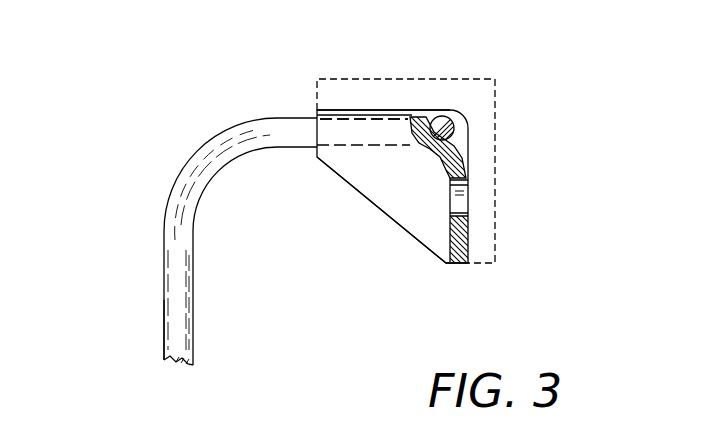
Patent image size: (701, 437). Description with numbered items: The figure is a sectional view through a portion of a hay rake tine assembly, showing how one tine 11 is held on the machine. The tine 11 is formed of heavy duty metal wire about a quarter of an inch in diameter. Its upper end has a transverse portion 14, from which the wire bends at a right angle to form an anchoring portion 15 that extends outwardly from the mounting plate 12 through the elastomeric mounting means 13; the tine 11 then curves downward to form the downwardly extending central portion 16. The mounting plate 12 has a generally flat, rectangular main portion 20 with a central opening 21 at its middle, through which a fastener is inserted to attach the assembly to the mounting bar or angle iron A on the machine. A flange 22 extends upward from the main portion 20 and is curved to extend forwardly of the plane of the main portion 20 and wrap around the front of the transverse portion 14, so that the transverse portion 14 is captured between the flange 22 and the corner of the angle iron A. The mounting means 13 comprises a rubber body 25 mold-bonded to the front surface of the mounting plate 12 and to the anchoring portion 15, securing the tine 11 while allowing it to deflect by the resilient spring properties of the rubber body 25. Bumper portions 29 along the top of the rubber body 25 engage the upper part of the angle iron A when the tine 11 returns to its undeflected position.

The angle iron A is at (485, 80).
The tine 11 is at (163, 336).
The mounting plate 12 is at (441, 249).
The elastomeric mounting means 13 is at (370, 200).
The transverse portion 14 is at (452, 129).
The anchoring portion 15 is at (369, 127).
The central portion 16 is at (164, 250).
The main portion 20 is at (462, 230).
The central opening 21 is at (462, 210).
The flange 22 is at (424, 118).
The rubber body 25 is at (410, 228).
The bumper portion 29 is at (328, 110).